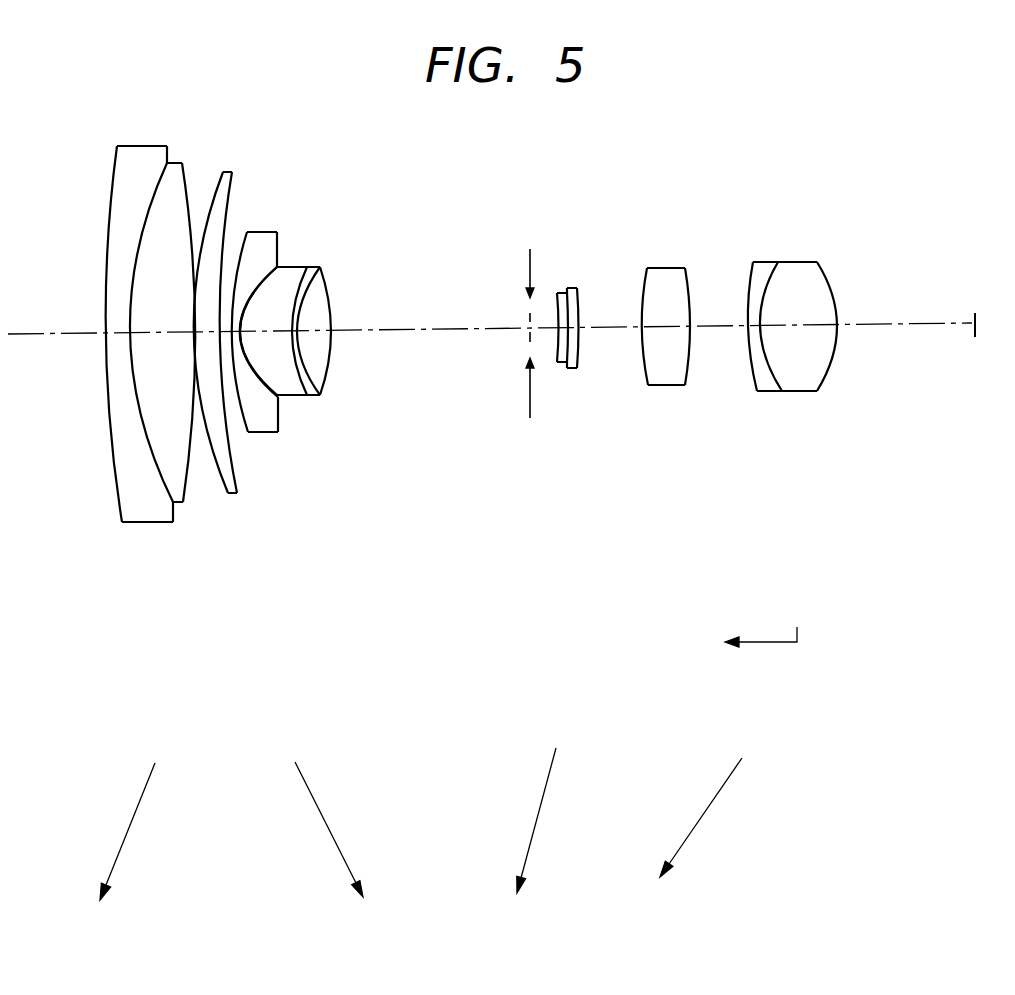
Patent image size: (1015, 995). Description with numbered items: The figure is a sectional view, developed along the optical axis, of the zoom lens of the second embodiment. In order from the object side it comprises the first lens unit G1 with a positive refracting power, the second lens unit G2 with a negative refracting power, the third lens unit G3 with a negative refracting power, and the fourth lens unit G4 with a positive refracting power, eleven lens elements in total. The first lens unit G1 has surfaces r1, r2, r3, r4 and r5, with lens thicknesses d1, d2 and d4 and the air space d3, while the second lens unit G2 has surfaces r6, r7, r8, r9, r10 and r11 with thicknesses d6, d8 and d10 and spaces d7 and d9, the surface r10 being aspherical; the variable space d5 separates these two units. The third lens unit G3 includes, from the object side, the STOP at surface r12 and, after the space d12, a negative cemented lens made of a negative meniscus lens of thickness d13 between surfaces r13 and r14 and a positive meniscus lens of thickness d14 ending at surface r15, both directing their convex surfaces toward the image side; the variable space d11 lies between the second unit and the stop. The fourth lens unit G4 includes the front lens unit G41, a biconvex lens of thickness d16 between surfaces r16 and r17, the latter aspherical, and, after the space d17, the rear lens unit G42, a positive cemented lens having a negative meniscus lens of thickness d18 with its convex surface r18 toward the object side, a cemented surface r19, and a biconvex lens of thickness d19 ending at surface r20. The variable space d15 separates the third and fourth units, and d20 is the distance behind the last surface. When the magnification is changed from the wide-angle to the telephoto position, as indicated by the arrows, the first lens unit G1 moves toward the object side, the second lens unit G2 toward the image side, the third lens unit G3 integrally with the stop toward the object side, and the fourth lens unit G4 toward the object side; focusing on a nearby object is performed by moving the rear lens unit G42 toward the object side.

The radius of curvature of first lens surface r1 is at (108, 188).
The radius of curvature of second lens surface r2 is at (150, 203).
The radius of curvature of third lens surface r3 is at (188, 180).
The radius of curvature of fourth lens surface r4 is at (203, 227).
The radius of curvature of fifth lens surface r5 is at (242, 213).
The radius of curvature of sixth lens surface r6 is at (240, 267).
The radius of curvature of seventh lens surface r7 is at (262, 277).
The radius of curvature of eighth lens surface r8 is at (287, 290).
The radius of curvature of ninth lens surface r9 is at (300, 297).
The radius of curvature of tenth lens surface r10 is at (305, 298).
The radius of curvature of eleventh lens surface r11 is at (330, 310).
The stop surface r12 is at (528, 262).
The radius of curvature of thirteenth lens surface r13 is at (553, 305).
The radius of curvature of fourteenth lens surface r14 is at (567, 287).
The radius of curvature of fifteenth lens surface r15 is at (578, 290).
The radius of curvature of sixteenth lens surface r16 is at (645, 272).
The radius of curvature of seventeenth lens surface r17 is at (690, 282).
The radius of curvature of eighteenth lens surface r18 is at (752, 283).
The radius of curvature of nineteenth lens surface r19 is at (770, 282).
The radius of curvature of twentieth lens surface r20 is at (827, 288).
The thickness of first lens d1 is at (115, 337).
The thickness of second lens d2 is at (152, 337).
The space between third and fourth surfaces d3 is at (152, 340).
The thickness of fourth lens d4 is at (194, 380).
The space between first and second lens units d5 is at (237, 440).
The thickness of sixth lens d6 is at (268, 436).
The space between seventh and eighth surfaces d7 is at (285, 430).
The thickness of eighth lens d8 is at (306, 398).
The space between ninth and tenth surfaces d9 is at (323, 400).
The thickness of tenth lens d10 is at (325, 388).
The space between second lens unit and stop d11 is at (460, 332).
The space between stop and thirteenth surface d12 is at (547, 332).
The thickness of thirteenth lens d13 is at (567, 372).
The thickness of fourteenth lens d14 is at (580, 350).
The space between third and fourth lens units d15 is at (613, 332).
The thickness of sixteenth lens d16 is at (667, 328).
The space between front and rear lens units d17 is at (722, 327).
The thickness of eighteenth lens d18 is at (750, 328).
The thickness of nineteenth lens d19 is at (795, 327).
The space behind twentieth surface d20 is at (912, 325).
The first lens unit G1 is at (154, 406).
The second lens unit G2 is at (320, 424).
The third lens unit G3 is at (585, 458).
The fourth lens unit G4 is at (746, 429).
The front lens unit G41 is at (659, 375).
The rear lens unit G42 is at (802, 419).
The stop STOP is at (530, 412).